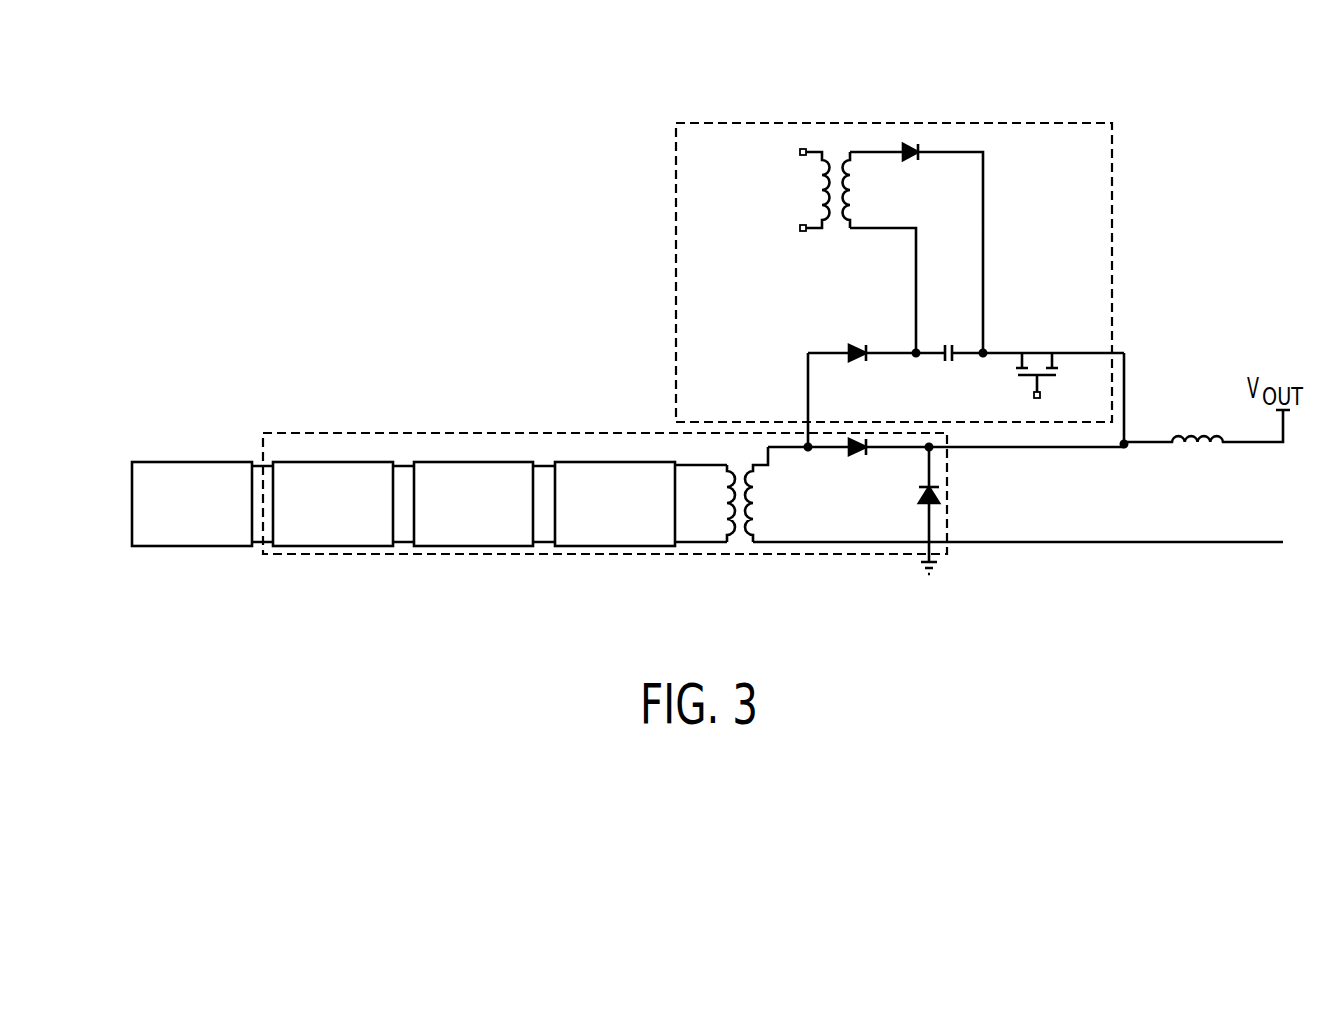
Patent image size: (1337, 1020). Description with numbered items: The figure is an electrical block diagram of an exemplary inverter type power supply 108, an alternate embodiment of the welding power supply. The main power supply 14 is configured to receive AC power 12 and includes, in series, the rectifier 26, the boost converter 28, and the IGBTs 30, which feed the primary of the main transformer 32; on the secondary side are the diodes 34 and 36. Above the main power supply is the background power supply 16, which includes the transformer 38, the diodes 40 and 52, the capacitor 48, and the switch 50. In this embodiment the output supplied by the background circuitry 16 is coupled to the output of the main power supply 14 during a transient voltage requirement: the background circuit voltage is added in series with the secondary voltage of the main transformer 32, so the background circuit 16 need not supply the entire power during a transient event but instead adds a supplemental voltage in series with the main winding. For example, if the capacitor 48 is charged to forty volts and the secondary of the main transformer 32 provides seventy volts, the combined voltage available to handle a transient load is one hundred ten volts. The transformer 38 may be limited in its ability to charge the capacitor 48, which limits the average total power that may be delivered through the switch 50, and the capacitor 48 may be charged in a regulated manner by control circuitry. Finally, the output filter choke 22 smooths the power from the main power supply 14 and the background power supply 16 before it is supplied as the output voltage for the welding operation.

The AC power 12 is at (192, 546).
The main power supply 14 is at (360, 432).
The background power supply 16 is at (1113, 272).
The output filter choke 22 is at (1196, 432).
The rectifier 26 is at (332, 546).
The boost converter 28 is at (473, 546).
The IGBTs 30 is at (615, 546).
The transformer 32 is at (743, 534).
The diode 34 is at (851, 457).
The diode 36 is at (936, 492).
The transformer 38 is at (834, 151).
The diode 40 is at (857, 347).
The capacitor 48 is at (944, 347).
The switch 50 is at (1037, 362).
The diode 52 is at (912, 150).
The inverter type power supply 108 is at (601, 119).